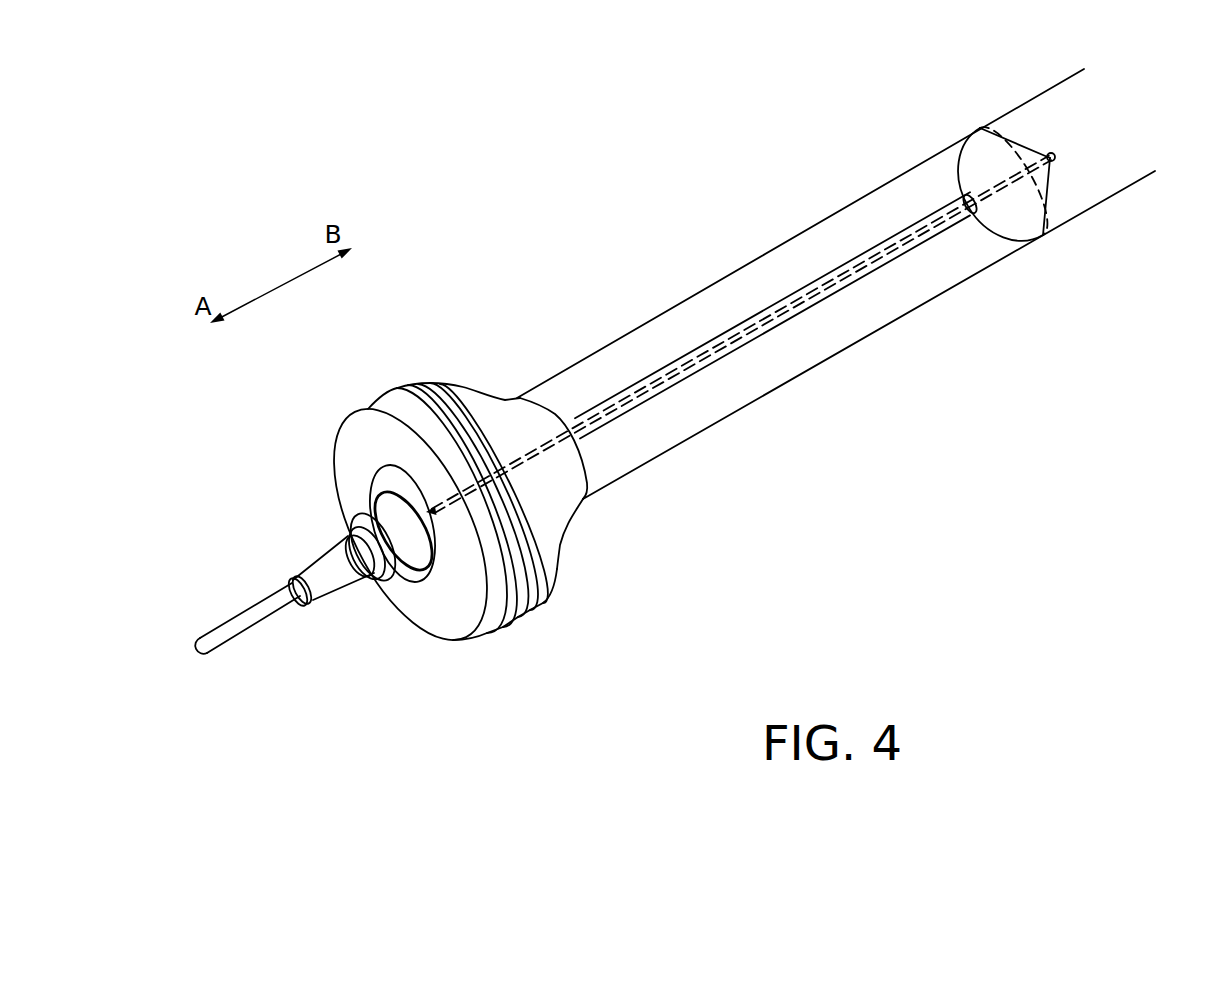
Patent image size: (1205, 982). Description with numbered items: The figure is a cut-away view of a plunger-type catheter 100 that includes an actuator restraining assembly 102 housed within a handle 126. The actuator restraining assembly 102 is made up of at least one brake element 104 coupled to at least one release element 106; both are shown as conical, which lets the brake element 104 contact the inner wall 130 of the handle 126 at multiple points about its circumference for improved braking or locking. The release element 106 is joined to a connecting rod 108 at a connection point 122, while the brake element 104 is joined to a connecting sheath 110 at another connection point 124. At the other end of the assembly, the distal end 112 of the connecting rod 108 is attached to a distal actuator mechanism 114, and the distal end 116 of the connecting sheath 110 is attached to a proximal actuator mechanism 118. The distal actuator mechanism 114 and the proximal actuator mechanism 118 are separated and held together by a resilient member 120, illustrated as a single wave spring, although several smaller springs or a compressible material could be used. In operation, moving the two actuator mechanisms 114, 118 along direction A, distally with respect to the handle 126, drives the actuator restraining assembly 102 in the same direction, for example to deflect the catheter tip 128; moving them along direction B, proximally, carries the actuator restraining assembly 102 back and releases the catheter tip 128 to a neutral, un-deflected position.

The plunger-type catheter 100 is at (620, 217).
The actuator restraining assembly 102 is at (1019, 130).
The brake element 104 is at (975, 150).
The release element 106 is at (1060, 213).
The connecting rod 108 is at (903, 230).
The connecting sheath 110 is at (660, 376).
The distal end of connecting rod 112 is at (442, 582).
The distal actuator mechanism 114 is at (360, 410).
The distal end of connecting sheath 116 is at (569, 408).
The proximal actuator mechanism 118 is at (438, 384).
The resilient member 120 is at (410, 386).
The connection point 122 is at (1054, 153).
The connection point 124 is at (975, 214).
The handle 126 is at (720, 277).
The catheter tip 128 is at (197, 649).
The inner wall 130 is at (710, 421).